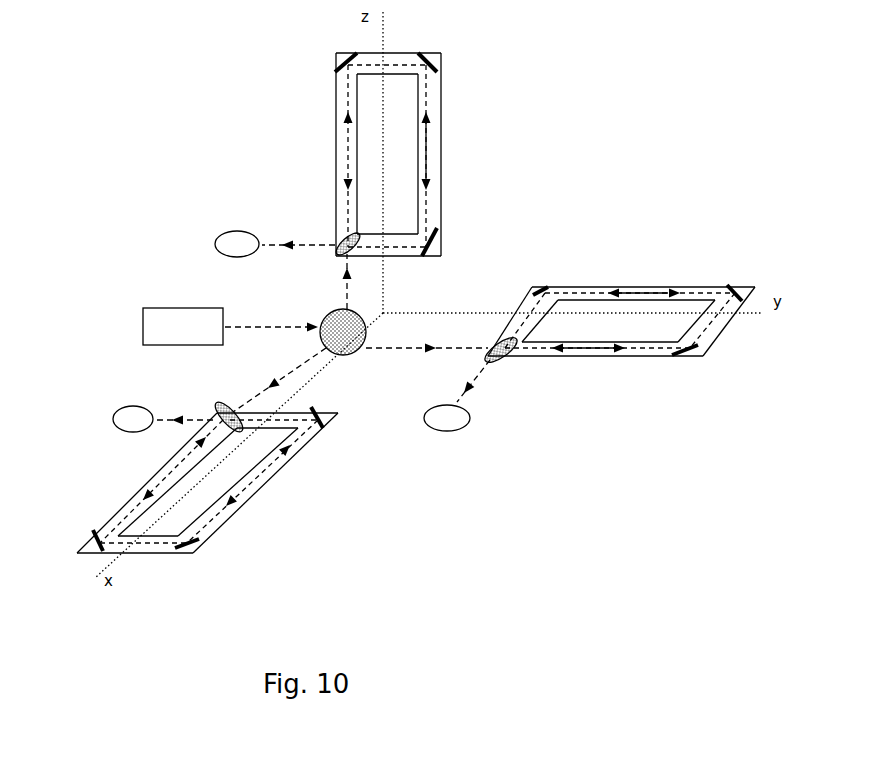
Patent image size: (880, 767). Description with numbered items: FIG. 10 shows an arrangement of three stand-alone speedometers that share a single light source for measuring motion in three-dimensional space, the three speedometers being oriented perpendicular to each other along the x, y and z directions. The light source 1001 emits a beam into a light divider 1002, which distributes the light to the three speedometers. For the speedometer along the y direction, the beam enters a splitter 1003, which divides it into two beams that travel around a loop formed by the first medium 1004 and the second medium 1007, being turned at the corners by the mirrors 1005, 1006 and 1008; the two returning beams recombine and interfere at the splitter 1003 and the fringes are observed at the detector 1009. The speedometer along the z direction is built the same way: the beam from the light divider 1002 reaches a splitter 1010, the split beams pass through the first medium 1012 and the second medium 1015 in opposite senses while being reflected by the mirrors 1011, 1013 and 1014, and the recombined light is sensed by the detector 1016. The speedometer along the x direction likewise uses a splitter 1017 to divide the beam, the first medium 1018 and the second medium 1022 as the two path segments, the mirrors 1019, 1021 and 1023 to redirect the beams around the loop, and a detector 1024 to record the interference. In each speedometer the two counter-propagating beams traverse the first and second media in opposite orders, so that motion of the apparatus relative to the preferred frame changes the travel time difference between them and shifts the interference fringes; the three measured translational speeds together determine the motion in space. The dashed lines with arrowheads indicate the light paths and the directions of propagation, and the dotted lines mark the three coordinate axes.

The light source 1001 is at (142, 300).
The light divider 1002 is at (350, 352).
The splitter 1003 is at (500, 360).
The first medium 1004 is at (653, 352).
The mirror 1005 is at (695, 358).
The mirror 1006 is at (735, 290).
The second medium 1007 is at (582, 290).
The mirror 1008 is at (538, 290).
The detector 1009 is at (447, 424).
The splitter 1010 is at (338, 250).
The mirror 1011 is at (428, 258).
The first medium 1012 is at (446, 88).
The mirror 1013 is at (438, 54).
The mirror 1014 is at (343, 57).
The second medium 1015 is at (344, 95).
The detector 1016 is at (220, 241).
The splitter 1017 is at (222, 410).
The first medium 1018 is at (126, 502).
The mirror 1019 is at (88, 538).
The mirror 1021 is at (192, 552).
The second medium 1022 is at (223, 526).
The mirror 1023 is at (320, 428).
The detector 1024 is at (116, 420).